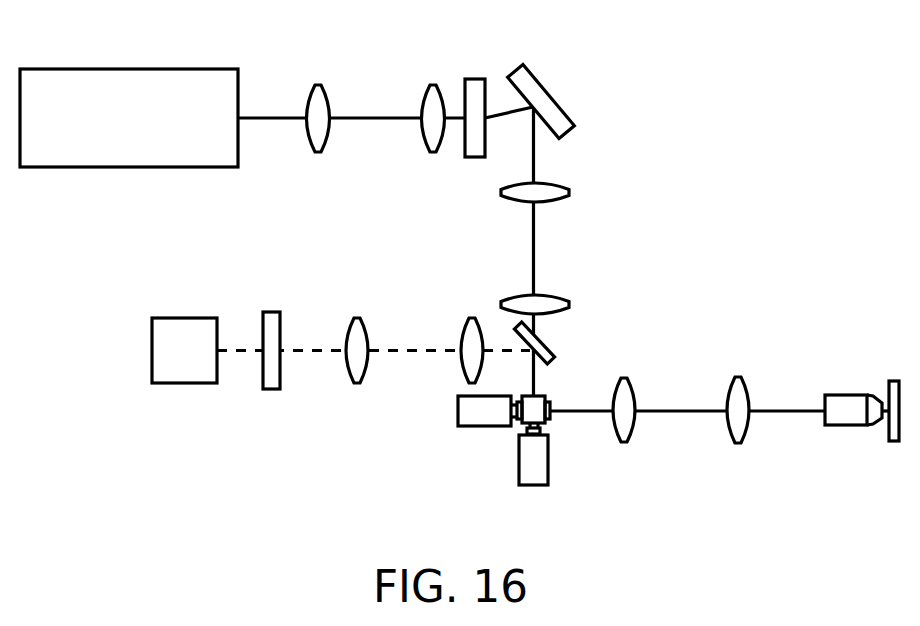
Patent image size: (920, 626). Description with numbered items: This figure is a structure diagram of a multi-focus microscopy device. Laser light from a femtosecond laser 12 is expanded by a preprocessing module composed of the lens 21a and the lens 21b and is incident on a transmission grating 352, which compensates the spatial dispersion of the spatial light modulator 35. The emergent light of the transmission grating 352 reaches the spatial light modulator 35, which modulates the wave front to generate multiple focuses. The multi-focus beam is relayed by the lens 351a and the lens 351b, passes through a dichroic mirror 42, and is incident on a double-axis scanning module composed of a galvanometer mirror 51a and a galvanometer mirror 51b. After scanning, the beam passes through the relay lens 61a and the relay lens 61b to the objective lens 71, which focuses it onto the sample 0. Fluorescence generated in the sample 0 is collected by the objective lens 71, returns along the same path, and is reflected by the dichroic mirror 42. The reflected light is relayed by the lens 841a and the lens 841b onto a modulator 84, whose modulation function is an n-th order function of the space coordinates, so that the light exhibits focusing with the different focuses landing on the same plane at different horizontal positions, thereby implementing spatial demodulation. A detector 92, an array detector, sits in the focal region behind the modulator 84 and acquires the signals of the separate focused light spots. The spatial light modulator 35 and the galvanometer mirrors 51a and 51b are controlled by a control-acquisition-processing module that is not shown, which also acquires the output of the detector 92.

The light source 12 is at (127, 69).
The lens 21a is at (321, 85).
The lens 21b is at (435, 85).
The transmission grating 352 is at (485, 79).
The spatial light modulator 35 is at (547, 93).
The lens 351a is at (570, 195).
The lens 351b is at (570, 307).
The dichroic mirror 42 is at (556, 360).
The detector 92 is at (197, 318).
The modulator 84 is at (281, 312).
The lens 841b is at (362, 318).
The lens 841a is at (478, 318).
The galvanometer mirror 51a is at (457, 416).
The galvanometer mirror 51b is at (519, 472).
The relay lens 61a is at (624, 442).
The relay lens 61b is at (738, 443).
The objective lens 71 is at (840, 425).
The sample 0 is at (894, 441).